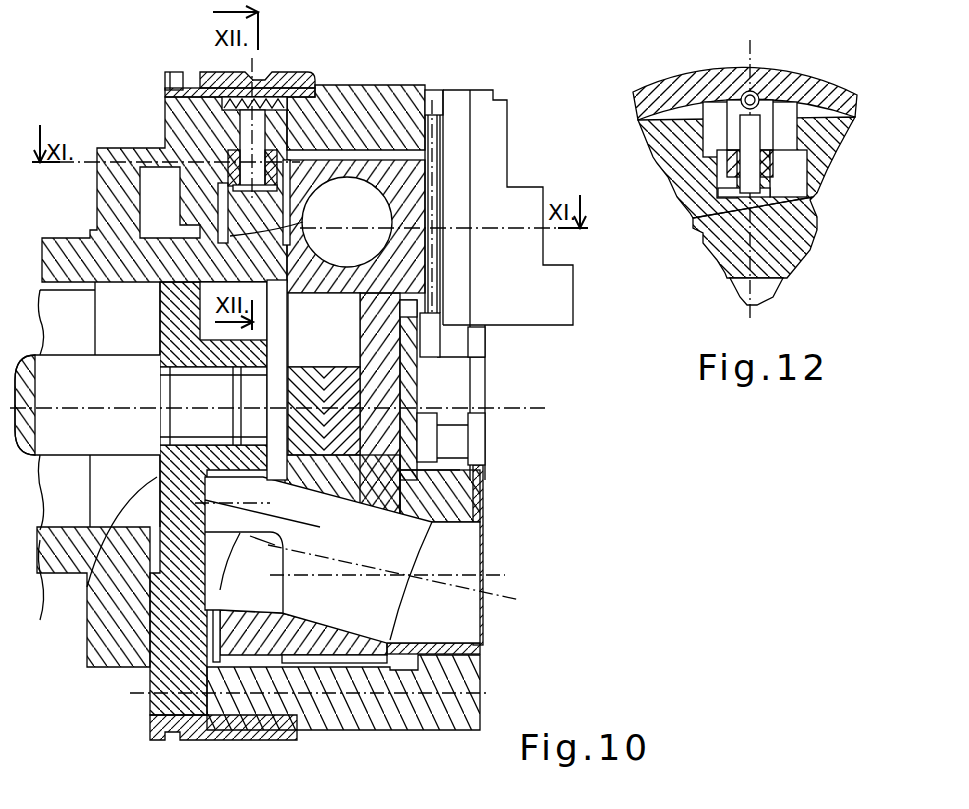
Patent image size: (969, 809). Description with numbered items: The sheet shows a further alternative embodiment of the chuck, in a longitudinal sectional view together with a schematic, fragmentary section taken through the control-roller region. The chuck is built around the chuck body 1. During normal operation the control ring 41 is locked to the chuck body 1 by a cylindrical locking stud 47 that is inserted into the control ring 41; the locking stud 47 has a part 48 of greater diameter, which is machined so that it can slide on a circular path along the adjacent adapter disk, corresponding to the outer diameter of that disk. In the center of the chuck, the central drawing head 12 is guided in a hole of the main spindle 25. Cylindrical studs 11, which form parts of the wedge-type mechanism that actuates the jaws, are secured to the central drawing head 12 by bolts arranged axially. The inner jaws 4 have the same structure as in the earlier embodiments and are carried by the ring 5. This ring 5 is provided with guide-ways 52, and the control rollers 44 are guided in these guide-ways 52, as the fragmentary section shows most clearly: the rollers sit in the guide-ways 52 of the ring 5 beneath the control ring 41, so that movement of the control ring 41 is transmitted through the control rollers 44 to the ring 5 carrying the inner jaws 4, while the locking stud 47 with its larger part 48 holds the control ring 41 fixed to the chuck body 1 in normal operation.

In FIG. 10, the chuck body 1 is at (422, 712).
In FIG. 12, the chuck body 1 is at (660, 130).
In FIG. 10, the inner jaws 4 is at (383, 452).
In FIG. 10, the ring 5 is at (227, 237).
In FIG. 12, the ring 5 is at (777, 257).
In FIG. 10, the cylindrical studs 11 is at (352, 620).
In FIG. 10, the central drawing head 12 is at (87, 582).
In FIG. 10, the main spindle 25 is at (320, 617).
In FIG. 10, the control ring 41 is at (280, 740).
In FIG. 12, the control ring 41 is at (672, 87).
In FIG. 10, the control rollers 44 is at (235, 160).
In FIG. 12, the control rollers 44 is at (693, 225).
In FIG. 10, the locking stud 47 is at (293, 73).
In FIG. 10, the part with greater diameter 48 is at (178, 74).
In FIG. 10, the guide-ways 52 is at (323, 157).
In FIG. 12, the guide-ways 52 is at (793, 173).